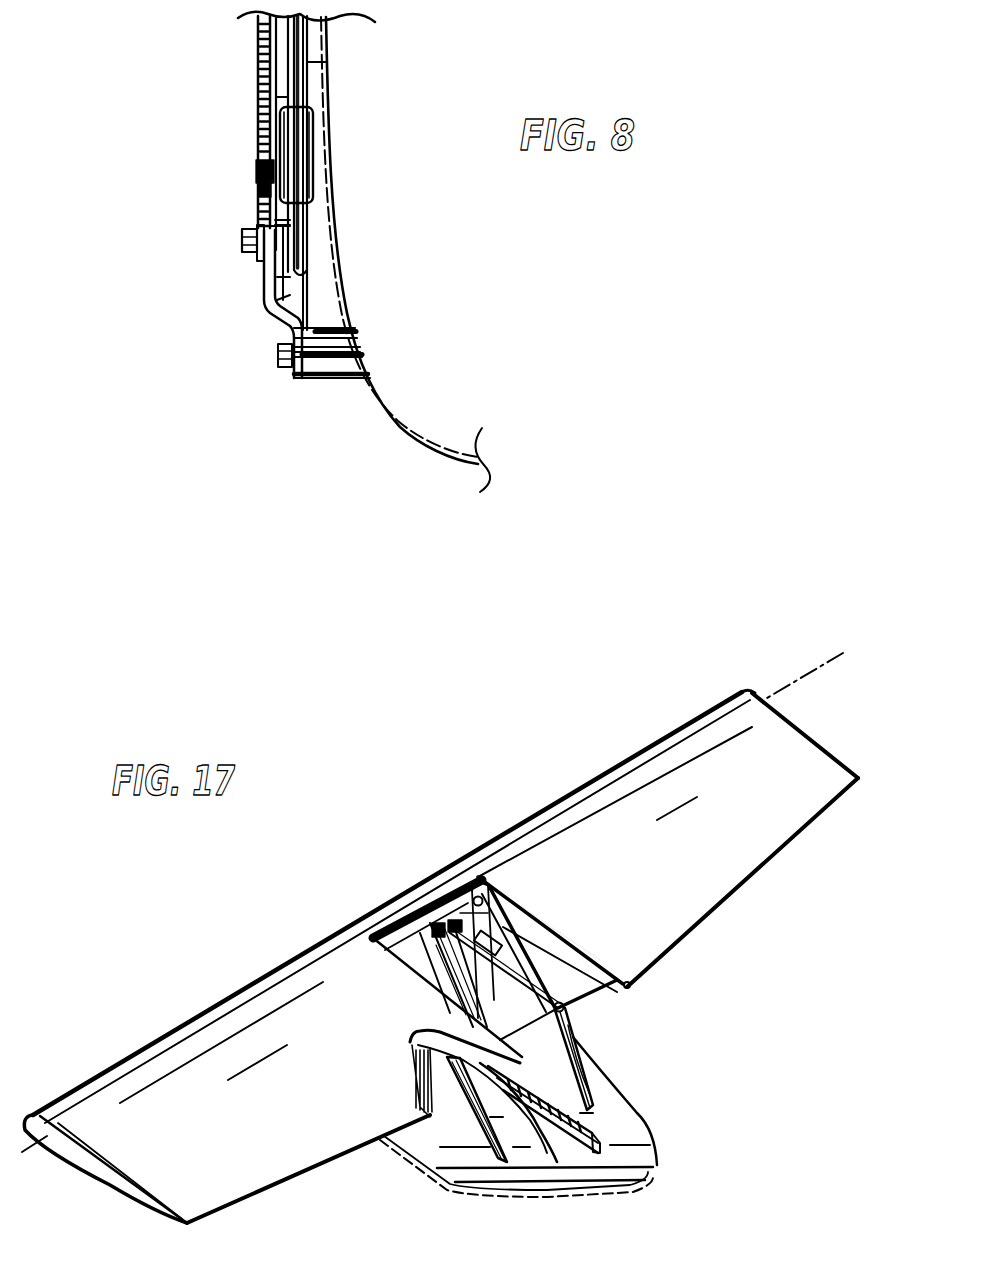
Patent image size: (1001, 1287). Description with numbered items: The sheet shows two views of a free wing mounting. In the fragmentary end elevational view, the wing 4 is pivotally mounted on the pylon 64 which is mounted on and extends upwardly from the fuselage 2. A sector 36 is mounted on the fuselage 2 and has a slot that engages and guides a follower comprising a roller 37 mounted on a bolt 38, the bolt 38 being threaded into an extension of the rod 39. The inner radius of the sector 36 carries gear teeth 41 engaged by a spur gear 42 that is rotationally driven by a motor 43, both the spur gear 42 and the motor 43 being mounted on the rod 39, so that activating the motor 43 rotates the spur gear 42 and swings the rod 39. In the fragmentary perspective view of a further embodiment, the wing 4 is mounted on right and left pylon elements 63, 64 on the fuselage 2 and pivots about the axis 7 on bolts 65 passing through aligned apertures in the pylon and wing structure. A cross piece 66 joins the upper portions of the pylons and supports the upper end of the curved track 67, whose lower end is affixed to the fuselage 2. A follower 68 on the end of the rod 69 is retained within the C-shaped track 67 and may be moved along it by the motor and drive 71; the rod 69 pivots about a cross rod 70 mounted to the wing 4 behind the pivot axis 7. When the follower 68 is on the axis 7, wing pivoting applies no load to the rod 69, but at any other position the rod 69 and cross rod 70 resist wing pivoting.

In FIG. 8, the fuselage 2 is at (395, 423).
In FIG. 17, the fuselage 2 is at (652, 1175).
In FIG. 17, the wing 4 is at (830, 810).
In FIG. 17, the axis 7 is at (827, 672).
In FIG. 8, the sector 36 is at (268, 320).
In FIG. 8, the roller 37 is at (273, 262).
In FIG. 8, the bolt 38 is at (242, 246).
In FIG. 8, the rod 39 is at (327, 62).
In FIG. 8, the gear teeth 41 is at (258, 104).
In FIG. 8, the spur gear 42 is at (262, 176).
In FIG. 8, the motor 43 is at (295, 135).
In FIG. 17, the left pylon element 63 is at (473, 1133).
In FIG. 17, the pylon element 64 is at (592, 1085).
In FIG. 17, the bolts 65 is at (487, 890).
In FIG. 17, the cross piece 66 is at (405, 912).
In FIG. 17, the curved track 67 is at (525, 1148).
In FIG. 17, the follower 68 is at (441, 916).
In FIG. 17, the rod 69 is at (550, 990).
In FIG. 17, the cross rod 70 is at (605, 986).
In FIG. 17, the motor and drive 71 is at (503, 927).